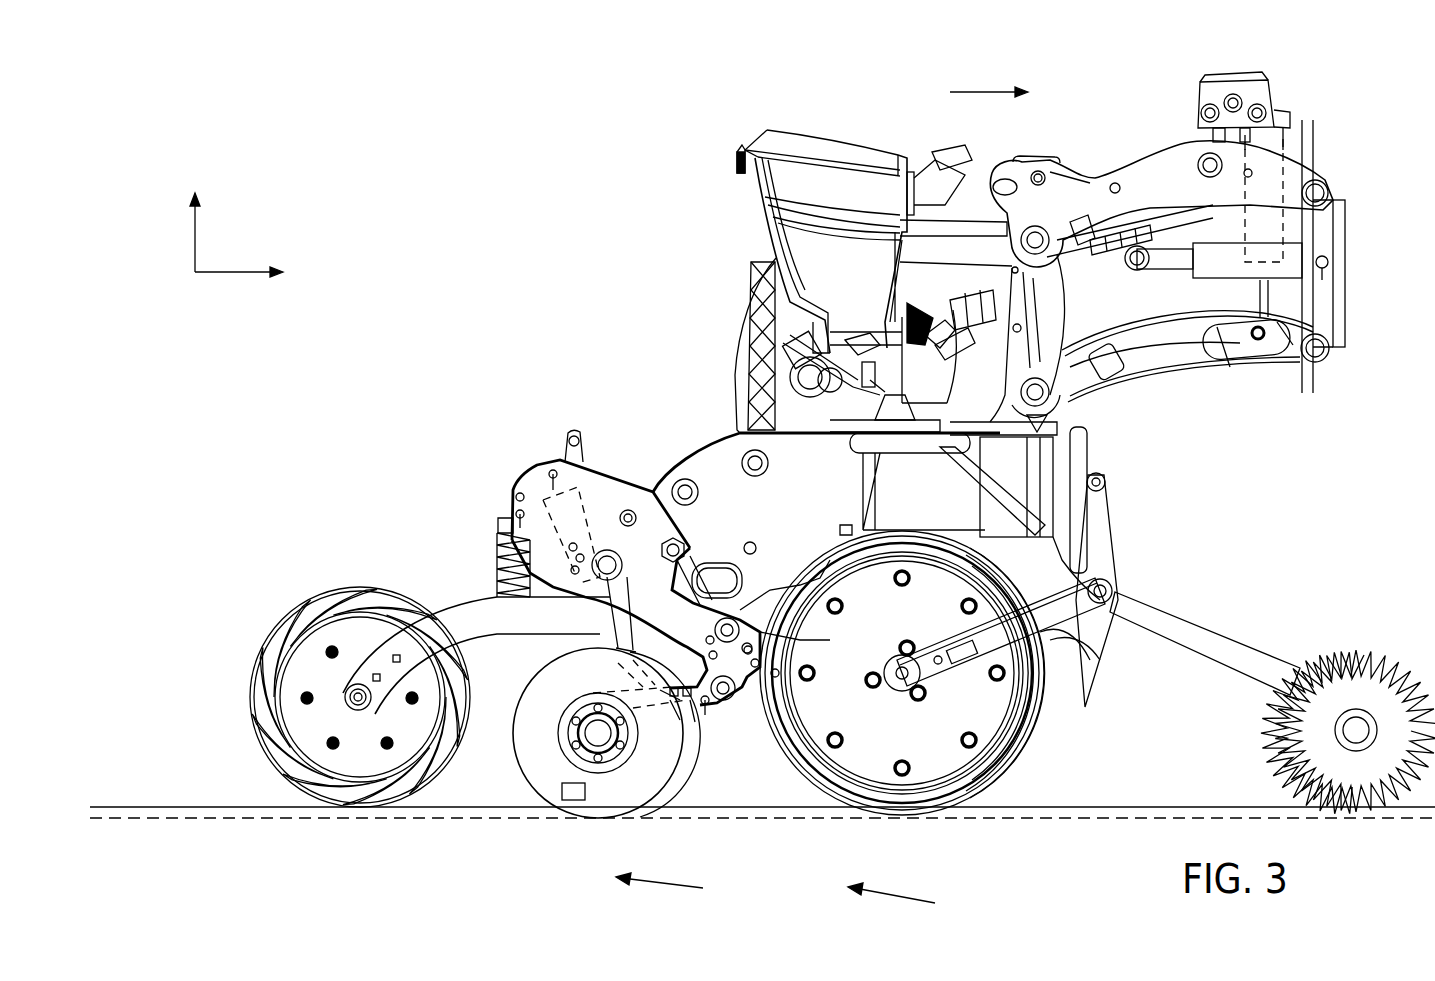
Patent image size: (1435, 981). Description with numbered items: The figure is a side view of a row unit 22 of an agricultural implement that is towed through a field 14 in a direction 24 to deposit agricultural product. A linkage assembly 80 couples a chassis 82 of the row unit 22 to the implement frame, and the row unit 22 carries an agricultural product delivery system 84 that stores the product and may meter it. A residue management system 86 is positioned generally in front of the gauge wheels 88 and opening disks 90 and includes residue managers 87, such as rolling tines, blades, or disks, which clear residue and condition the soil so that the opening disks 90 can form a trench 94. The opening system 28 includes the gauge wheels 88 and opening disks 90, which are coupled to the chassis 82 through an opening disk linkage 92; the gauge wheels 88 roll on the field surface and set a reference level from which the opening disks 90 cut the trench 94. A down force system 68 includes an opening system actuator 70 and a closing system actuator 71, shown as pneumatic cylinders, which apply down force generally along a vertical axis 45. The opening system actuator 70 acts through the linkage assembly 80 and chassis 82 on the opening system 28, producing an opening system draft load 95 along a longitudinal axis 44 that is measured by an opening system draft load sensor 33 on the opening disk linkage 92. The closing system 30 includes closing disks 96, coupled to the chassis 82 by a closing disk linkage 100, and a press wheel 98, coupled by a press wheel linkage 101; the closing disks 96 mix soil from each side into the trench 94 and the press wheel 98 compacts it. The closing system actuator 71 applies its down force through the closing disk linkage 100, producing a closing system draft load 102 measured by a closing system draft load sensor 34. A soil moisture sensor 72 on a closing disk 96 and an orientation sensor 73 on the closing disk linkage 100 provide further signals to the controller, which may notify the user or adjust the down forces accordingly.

The field 14 is at (1183, 808).
The row unit 22 is at (1322, 72).
The direction 24 is at (952, 92).
The opening system 28 is at (958, 830).
The closing system 30 is at (415, 385).
The opening system draft load sensor 33 is at (963, 662).
The closing system draft load sensor 34 is at (685, 705).
The longitudinal axis 44 is at (235, 271).
The vertical axis 45 is at (200, 240).
The down force system 68 is at (905, 108).
The opening system actuator 70 is at (1290, 150).
The closing system actuator 71 is at (592, 490).
The soil moisture sensor 72 is at (575, 800).
The orientation sensor 73 is at (655, 705).
The linkage assembly 80 is at (1360, 170).
The chassis 82 is at (700, 455).
The agricultural product delivery system 84 is at (698, 305).
The residue management system 86 is at (1368, 630).
The residue managers 87 is at (1410, 676).
The gauge wheels 88 is at (1008, 757).
The opening disks 90 is at (868, 812).
The opening disk linkage 92 is at (1042, 632).
The trench 94 is at (728, 813).
The opening system draft load 95 is at (910, 901).
The closing disks 96 is at (517, 745).
The press wheel 98 is at (257, 682).
The closing disk linkage 100 is at (692, 700).
The press wheel linkage 101 is at (472, 598).
The closing system draft load 102 is at (682, 888).